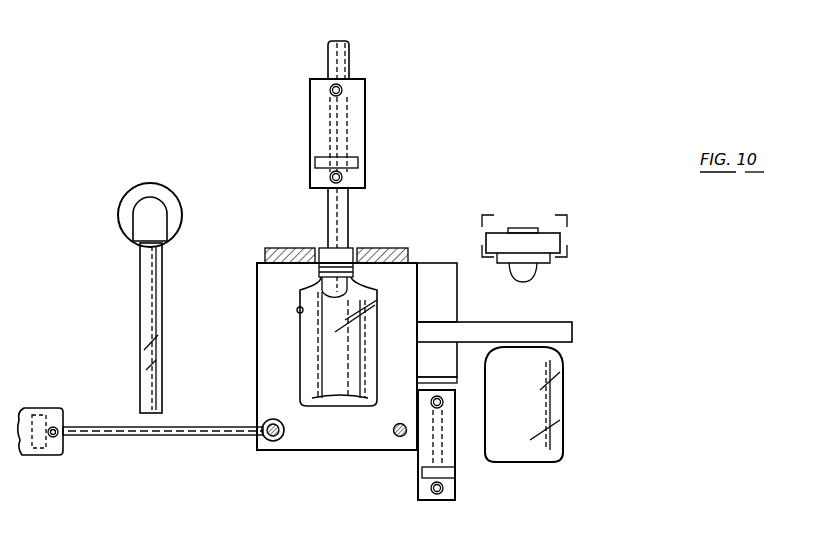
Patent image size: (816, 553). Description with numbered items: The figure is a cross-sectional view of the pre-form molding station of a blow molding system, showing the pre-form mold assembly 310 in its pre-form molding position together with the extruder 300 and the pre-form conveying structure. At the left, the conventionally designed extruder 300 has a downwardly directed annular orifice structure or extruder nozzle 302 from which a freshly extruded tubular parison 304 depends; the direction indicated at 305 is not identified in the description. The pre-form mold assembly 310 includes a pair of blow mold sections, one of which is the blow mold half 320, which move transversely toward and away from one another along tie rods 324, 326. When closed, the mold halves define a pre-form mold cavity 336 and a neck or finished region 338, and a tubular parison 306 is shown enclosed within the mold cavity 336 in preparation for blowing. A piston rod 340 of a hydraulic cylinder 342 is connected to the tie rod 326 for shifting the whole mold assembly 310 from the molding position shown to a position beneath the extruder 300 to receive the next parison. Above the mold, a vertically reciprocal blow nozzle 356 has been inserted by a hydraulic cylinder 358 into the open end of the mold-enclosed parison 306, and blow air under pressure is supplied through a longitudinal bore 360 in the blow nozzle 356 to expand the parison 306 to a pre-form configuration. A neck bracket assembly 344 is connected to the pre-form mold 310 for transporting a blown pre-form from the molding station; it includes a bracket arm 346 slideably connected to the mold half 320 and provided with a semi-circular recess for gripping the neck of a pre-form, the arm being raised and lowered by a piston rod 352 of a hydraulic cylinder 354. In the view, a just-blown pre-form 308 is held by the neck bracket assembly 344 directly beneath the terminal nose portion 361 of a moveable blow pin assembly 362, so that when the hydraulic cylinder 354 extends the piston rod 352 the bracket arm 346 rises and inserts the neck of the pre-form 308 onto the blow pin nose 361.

The extruder 300 is at (134, 176).
The extruder nozzle 302 is at (163, 220).
The tubular parison 304 is at (139, 313).
The direction of movement 305 is at (100, 254).
The tubular parison 306 is at (318, 343).
The pre-form 308 is at (560, 392).
The pre-form mold assembly 310 is at (148, 484).
The blow mold section 320 is at (403, 275).
The tie rod 324 is at (399, 437).
The tie rod 326 is at (273, 442).
The pre-form mold cavity 336 is at (297, 310).
The neck region 338 is at (318, 281).
The piston rod 340 is at (106, 432).
The hydraulic cylinder 342 is at (40, 452).
The neck bracket assembly 344 is at (587, 320).
The bracket arm 346 is at (565, 333).
The piston rod 352 is at (437, 384).
The hydraulic cylinder 354 is at (455, 487).
The blow nozzle 356 is at (348, 210).
The hydraulic cylinder 358 is at (358, 115).
The longitudinal bore 360 is at (337, 45).
The terminal nose portion 361 is at (535, 275).
The moveable blow pin assembly 362 is at (576, 238).